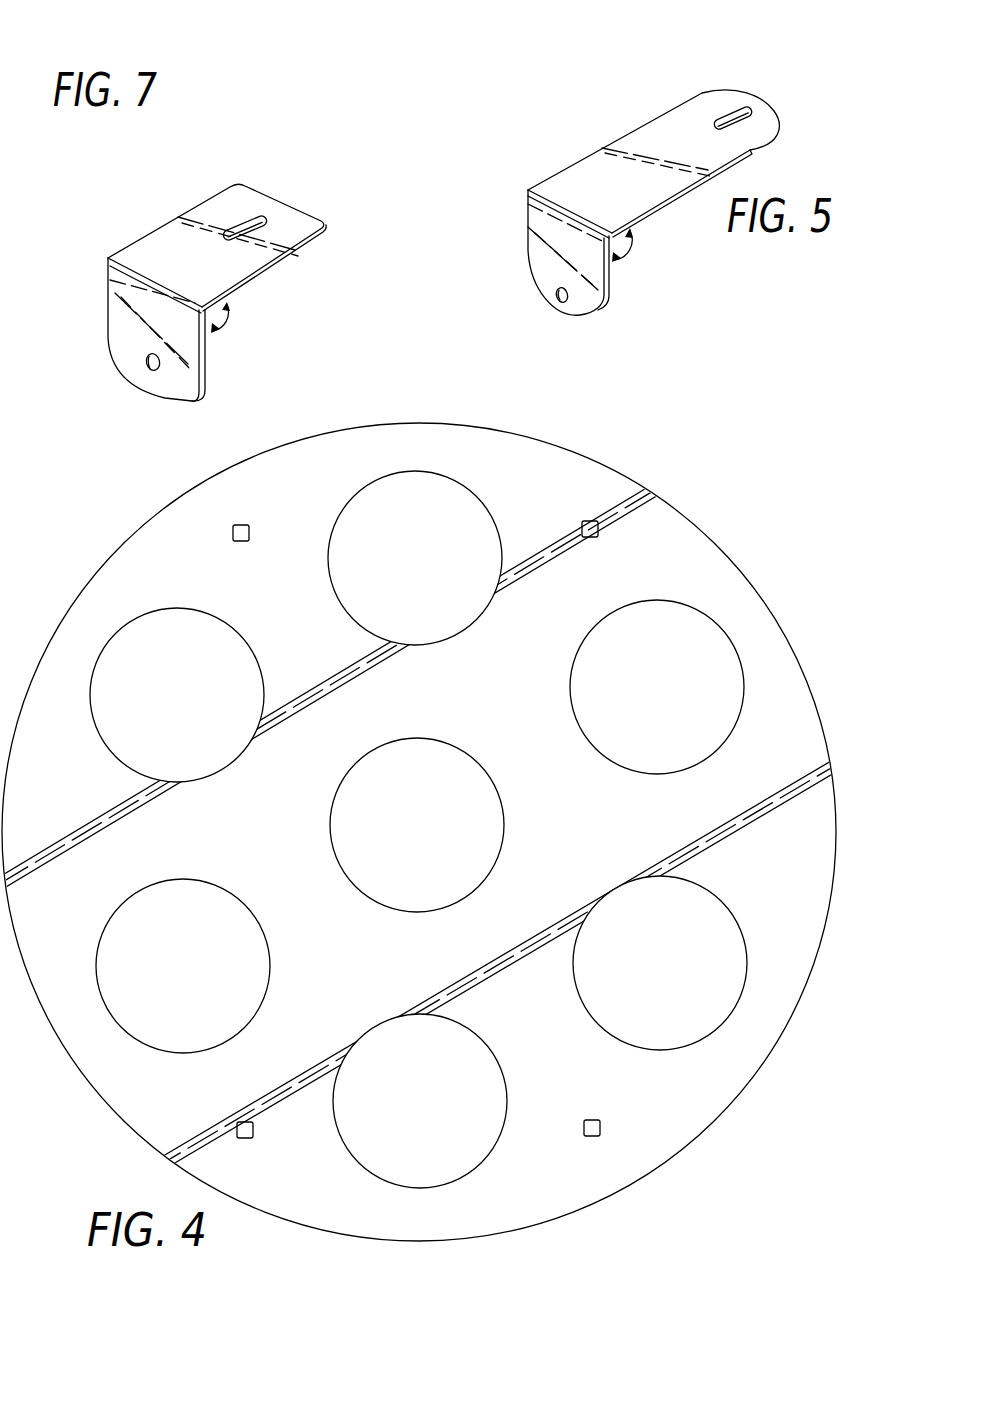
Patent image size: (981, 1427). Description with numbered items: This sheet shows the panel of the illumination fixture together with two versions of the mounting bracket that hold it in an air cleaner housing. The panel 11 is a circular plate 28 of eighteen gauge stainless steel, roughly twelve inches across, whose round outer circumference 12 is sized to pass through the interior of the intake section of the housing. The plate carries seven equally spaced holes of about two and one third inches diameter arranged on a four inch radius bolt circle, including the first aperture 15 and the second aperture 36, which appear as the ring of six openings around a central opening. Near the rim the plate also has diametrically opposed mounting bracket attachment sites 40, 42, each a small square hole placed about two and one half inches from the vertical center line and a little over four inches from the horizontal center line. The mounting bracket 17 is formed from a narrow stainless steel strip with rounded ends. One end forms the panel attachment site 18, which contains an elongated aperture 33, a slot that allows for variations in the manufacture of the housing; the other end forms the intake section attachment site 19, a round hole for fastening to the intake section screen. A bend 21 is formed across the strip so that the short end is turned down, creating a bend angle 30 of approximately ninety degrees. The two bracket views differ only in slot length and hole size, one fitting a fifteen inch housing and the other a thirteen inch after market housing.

In FIG. 4, the panel 11 is at (439, 842).
In FIG. 4, the round outer circumference 12 is at (764, 595).
In FIG. 4, the first aperture 15 is at (673, 601).
In FIG. 7, the mounting bracket 17 is at (177, 277).
In FIG. 5, the mounting bracket 17 is at (620, 185).
In FIG. 7, the panel attachment site 18 is at (246, 220).
In FIG. 5, the panel attachment site 18 is at (732, 113).
In FIG. 7, the intake section attachment site 19 is at (147, 359).
In FIG. 5, the intake section attachment site 19 is at (553, 297).
In FIG. 7, the bend 21 is at (127, 273).
In FIG. 5, the bend 21 is at (553, 207).
In FIG. 4, the circular plate 28 is at (795, 722).
In FIG. 7, the bend angle 30 is at (219, 323).
In FIG. 5, the bend angle 30 is at (627, 249).
In FIG. 7, the elongated aperture 33 is at (260, 207).
In FIG. 5, the elongated aperture 33 is at (744, 99).
In FIG. 4, the second aperture 36 is at (437, 475).
In FIG. 4, the mounting bracket attachment site 40 is at (594, 521).
In FIG. 4, the mounting bracket attachment site 42 is at (250, 1138).